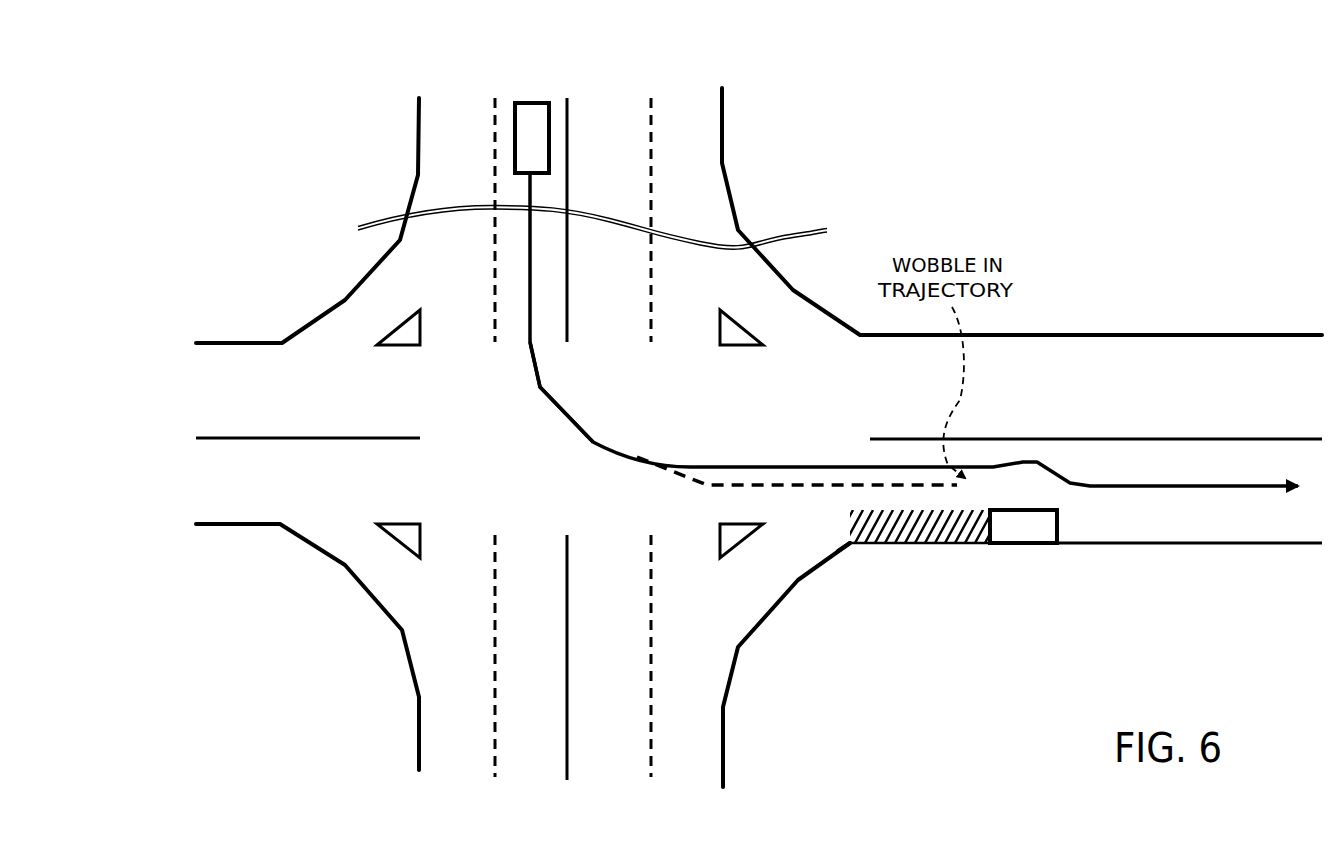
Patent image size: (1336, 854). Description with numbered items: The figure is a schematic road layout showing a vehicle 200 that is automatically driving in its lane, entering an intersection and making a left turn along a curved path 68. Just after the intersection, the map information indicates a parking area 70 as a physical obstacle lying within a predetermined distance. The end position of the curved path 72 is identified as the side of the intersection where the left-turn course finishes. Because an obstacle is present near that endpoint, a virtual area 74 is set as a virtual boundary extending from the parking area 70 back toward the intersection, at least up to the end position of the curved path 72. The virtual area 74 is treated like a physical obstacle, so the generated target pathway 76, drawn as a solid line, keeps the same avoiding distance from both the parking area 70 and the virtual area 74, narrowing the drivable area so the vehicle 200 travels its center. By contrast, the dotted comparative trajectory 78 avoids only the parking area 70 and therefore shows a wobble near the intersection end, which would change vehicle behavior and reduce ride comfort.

The vehicle 200 is at (537, 117).
The curved path 68 is at (528, 440).
The parking area 70 is at (1033, 532).
The end position of the curved path 72 is at (852, 552).
The virtual area 74 is at (940, 550).
The target pathway 76 is at (860, 465).
The comparative trajectory 78 is at (802, 480).